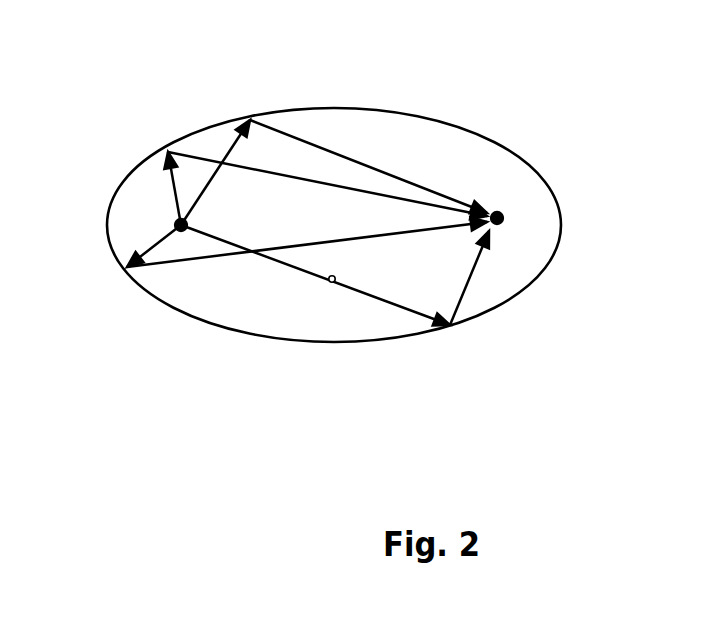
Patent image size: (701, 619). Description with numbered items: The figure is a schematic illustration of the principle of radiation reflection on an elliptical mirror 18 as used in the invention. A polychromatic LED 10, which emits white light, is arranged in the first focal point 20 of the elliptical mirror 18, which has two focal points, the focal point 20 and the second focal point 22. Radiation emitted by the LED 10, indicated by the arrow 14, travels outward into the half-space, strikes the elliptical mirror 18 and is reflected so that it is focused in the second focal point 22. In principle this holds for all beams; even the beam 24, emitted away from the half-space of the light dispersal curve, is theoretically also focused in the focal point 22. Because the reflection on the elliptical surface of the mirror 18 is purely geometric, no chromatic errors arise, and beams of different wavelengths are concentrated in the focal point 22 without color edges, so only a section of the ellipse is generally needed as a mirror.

The LED 10 is at (188, 222).
The arrow 14 is at (170, 197).
The elliptical mirror 18 is at (447, 119).
The focal point 20 is at (181, 225).
The second focal point 22 is at (492, 225).
The beam 24 is at (333, 283).